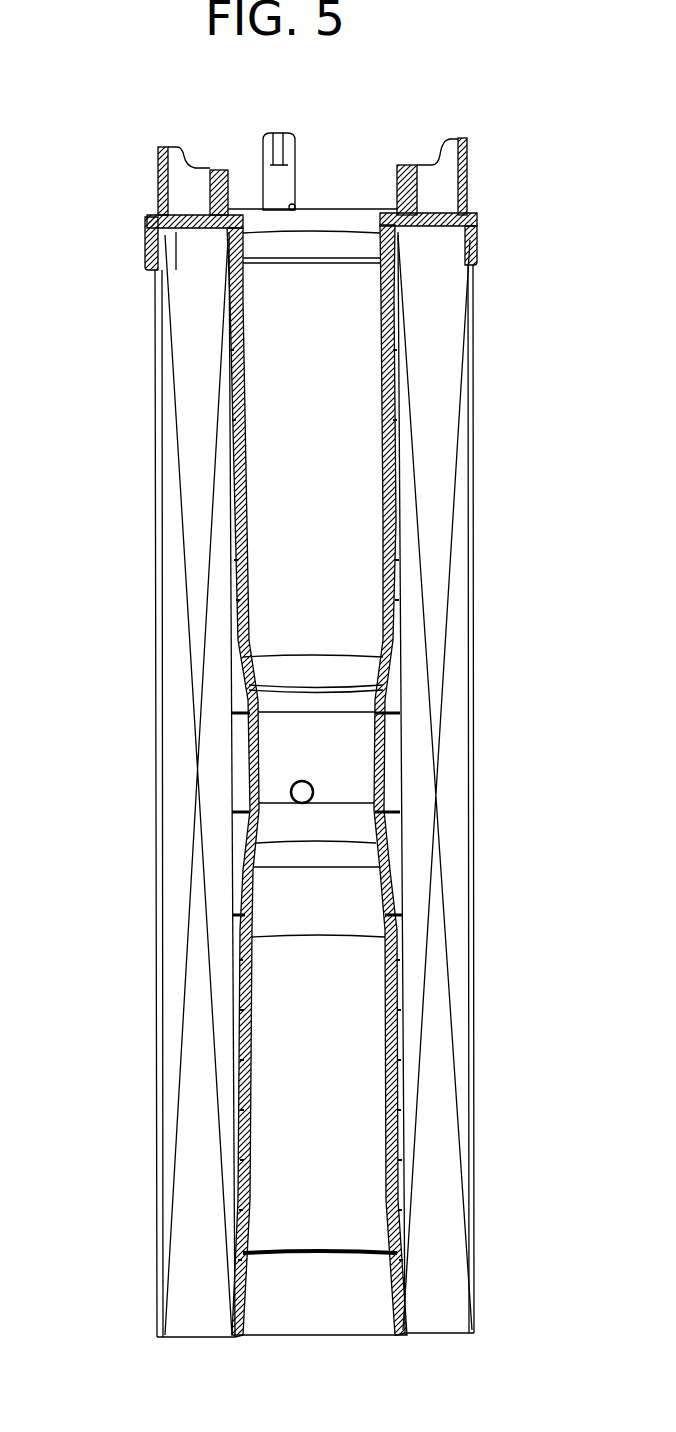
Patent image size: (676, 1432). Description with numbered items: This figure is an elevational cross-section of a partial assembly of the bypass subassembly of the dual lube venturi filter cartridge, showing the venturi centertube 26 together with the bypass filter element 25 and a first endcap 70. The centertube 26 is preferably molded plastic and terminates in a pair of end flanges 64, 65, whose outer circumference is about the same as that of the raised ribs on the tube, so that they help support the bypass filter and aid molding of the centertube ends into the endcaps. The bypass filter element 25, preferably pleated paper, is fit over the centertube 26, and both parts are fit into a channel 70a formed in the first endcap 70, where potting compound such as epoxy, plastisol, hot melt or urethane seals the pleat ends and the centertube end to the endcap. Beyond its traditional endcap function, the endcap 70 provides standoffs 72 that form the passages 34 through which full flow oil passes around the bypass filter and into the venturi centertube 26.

The bypass filter element 25 is at (302, 784).
The venturi centertube 26 is at (393, 567).
The passages 34 is at (242, 163).
The end flange 64 is at (224, 260).
The end flange 65 is at (232, 1306).
The first endcap 70 is at (477, 220).
The channel 70a is at (176, 233).
The standoffs 72 is at (150, 209).